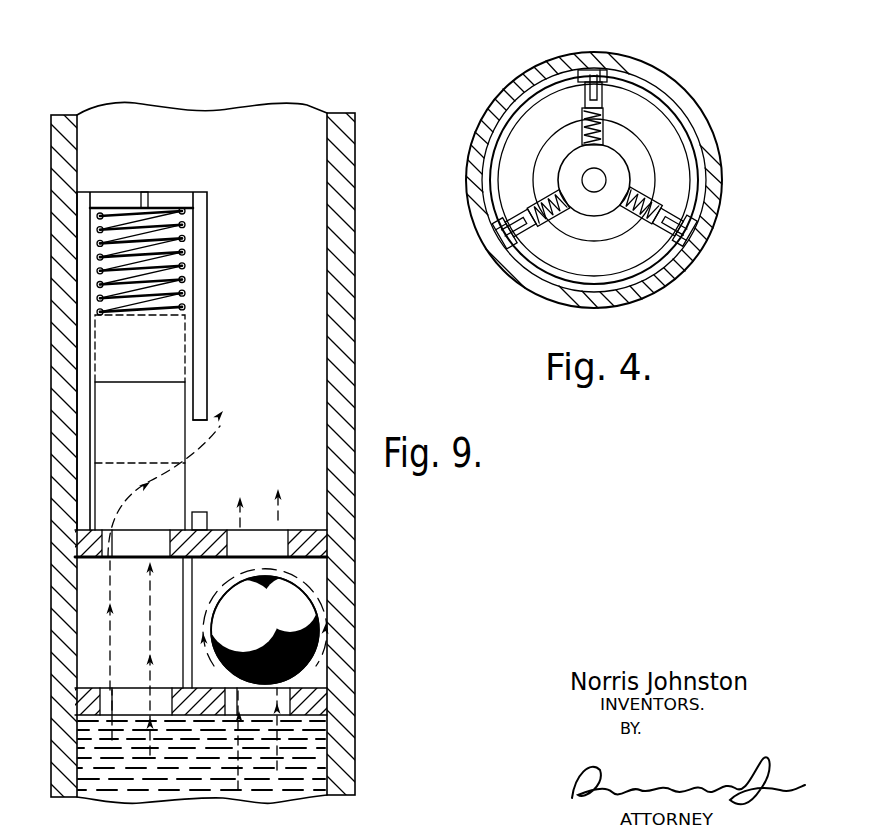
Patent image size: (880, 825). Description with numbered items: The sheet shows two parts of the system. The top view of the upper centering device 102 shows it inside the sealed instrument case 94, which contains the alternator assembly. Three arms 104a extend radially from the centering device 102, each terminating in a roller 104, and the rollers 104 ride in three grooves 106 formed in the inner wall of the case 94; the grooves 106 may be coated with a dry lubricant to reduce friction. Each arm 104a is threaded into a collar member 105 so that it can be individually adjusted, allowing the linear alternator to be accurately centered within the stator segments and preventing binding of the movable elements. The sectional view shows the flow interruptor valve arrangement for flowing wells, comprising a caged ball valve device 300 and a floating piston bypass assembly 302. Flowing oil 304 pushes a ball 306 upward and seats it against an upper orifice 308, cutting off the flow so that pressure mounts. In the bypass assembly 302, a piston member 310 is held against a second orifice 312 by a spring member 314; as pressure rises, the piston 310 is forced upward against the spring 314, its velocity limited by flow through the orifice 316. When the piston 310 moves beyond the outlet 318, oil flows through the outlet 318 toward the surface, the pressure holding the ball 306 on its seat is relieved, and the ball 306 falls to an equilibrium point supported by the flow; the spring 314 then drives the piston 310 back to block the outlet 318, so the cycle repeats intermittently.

In FIG. 9, the caged ball valve device 300 is at (226, 448).
In FIG. 9, the floating piston bypass assembly 302 is at (170, 361).
In FIG. 9, the flowing oil 304 is at (310, 747).
In FIG. 9, the ball 306 is at (271, 615).
In FIG. 9, the upper orifice 308 is at (295, 548).
In FIG. 9, the piston member 310 is at (187, 478).
In FIG. 9, the second orifice 312 is at (172, 542).
In FIG. 9, the spring member 314 is at (184, 256).
In FIG. 9, the orifice 316 is at (147, 192).
In FIG. 9, the outlet 318 is at (200, 421).
In FIG. 4, the sealed instrument case 94 is at (506, 92).
In FIG. 4, the upper centering device 102 is at (618, 167).
In FIG. 4, the roller 104 is at (583, 70).
In FIG. 4, the arm 104a is at (602, 103).
In FIG. 4, the collar member 105 is at (603, 120).
In FIG. 4, the groove 106 is at (604, 72).